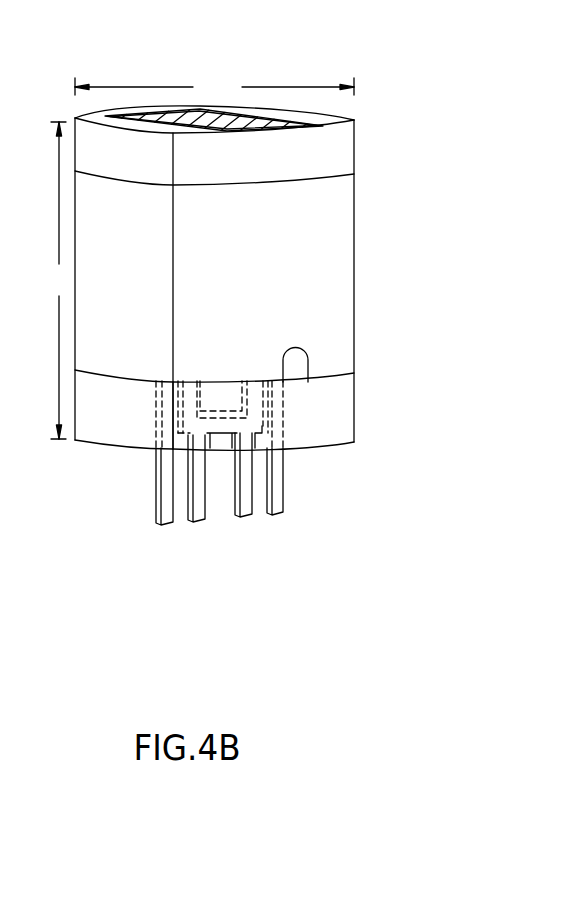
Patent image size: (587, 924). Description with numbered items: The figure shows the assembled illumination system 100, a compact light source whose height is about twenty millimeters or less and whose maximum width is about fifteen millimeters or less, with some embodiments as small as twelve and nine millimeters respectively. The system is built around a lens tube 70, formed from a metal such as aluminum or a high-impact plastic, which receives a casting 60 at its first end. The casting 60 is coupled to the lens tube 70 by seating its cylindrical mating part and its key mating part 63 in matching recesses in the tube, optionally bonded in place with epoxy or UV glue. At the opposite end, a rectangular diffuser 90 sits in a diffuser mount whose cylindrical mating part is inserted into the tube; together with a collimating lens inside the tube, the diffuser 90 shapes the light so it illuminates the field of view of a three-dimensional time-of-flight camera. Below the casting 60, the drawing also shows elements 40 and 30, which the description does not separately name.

The illumination system 100 is at (330, 153).
The diffuser 90 is at (258, 118).
The lens tube 70 is at (325, 242).
The key mating part 63 is at (295, 362).
The casting 60 is at (340, 410).
The lead pins 40 is at (166, 410).
The connector block 30 is at (216, 438).